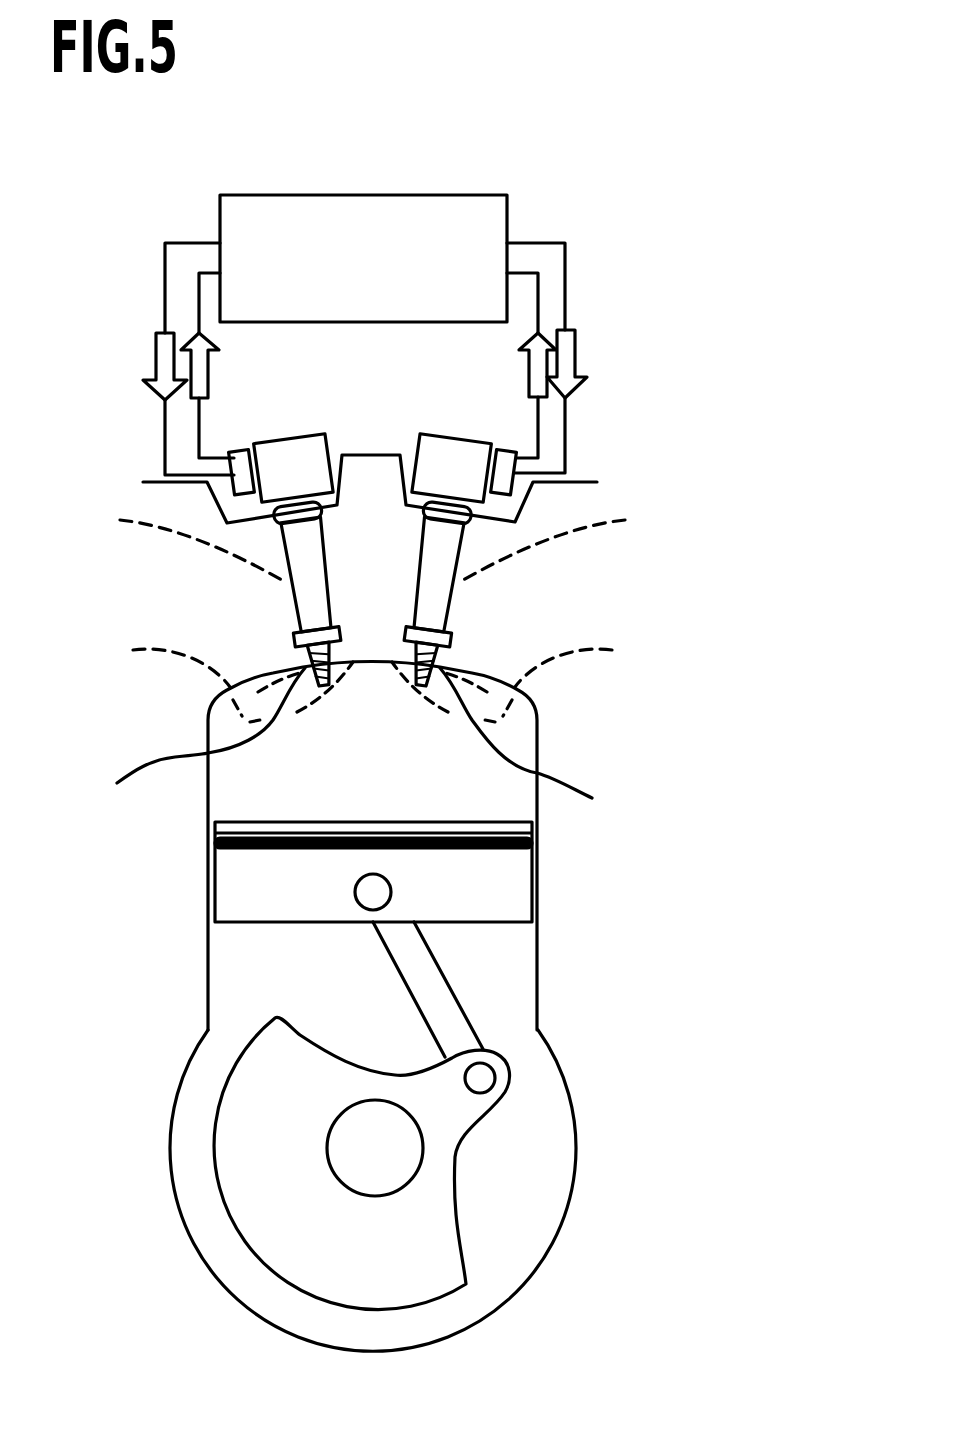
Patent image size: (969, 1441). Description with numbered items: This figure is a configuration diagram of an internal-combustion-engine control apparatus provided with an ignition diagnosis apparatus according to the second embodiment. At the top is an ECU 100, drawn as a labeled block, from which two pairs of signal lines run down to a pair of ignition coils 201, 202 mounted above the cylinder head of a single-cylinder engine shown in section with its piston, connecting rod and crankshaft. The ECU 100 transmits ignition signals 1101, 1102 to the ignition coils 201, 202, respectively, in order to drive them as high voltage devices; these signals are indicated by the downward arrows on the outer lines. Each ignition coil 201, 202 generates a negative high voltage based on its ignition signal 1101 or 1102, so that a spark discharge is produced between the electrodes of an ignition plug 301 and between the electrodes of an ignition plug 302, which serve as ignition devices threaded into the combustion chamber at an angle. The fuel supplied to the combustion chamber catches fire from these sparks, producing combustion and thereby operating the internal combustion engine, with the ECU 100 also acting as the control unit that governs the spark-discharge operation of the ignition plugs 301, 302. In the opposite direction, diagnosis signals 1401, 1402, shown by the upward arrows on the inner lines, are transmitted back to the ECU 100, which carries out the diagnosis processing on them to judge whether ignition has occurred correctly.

The ECU 100 is at (393, 195).
The ignition signal 1101 is at (577, 350).
The ignition signal 1102 is at (153, 358).
The diagnosis signal 1401 is at (526, 378).
The diagnosis signal 1402 is at (210, 375).
The ignition coil 201 is at (478, 497).
The ignition coil 202 is at (225, 515).
The ignition plug 301 is at (529, 669).
The ignition plug 302 is at (206, 673).